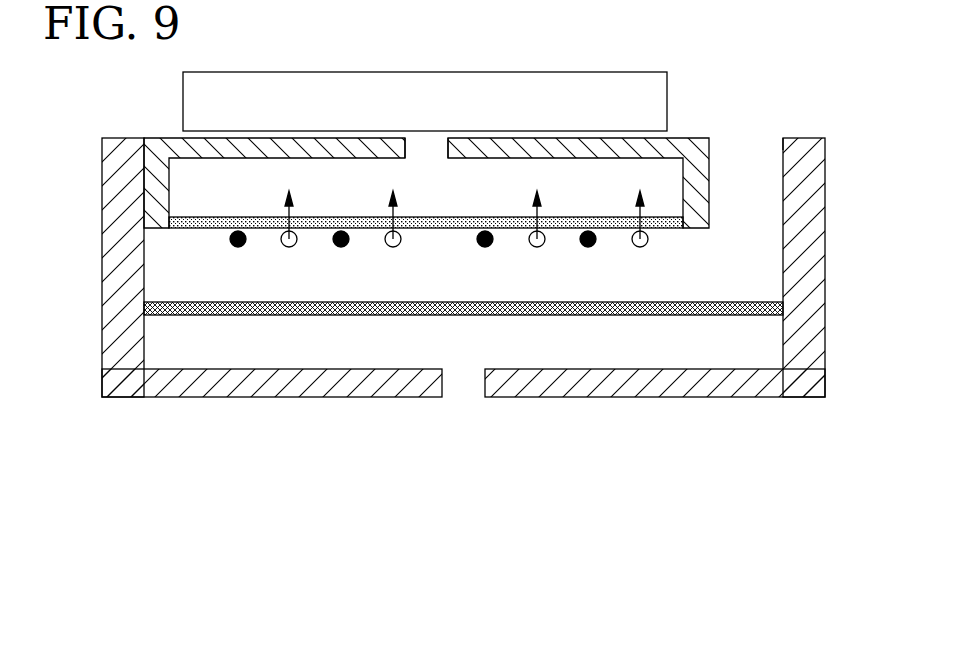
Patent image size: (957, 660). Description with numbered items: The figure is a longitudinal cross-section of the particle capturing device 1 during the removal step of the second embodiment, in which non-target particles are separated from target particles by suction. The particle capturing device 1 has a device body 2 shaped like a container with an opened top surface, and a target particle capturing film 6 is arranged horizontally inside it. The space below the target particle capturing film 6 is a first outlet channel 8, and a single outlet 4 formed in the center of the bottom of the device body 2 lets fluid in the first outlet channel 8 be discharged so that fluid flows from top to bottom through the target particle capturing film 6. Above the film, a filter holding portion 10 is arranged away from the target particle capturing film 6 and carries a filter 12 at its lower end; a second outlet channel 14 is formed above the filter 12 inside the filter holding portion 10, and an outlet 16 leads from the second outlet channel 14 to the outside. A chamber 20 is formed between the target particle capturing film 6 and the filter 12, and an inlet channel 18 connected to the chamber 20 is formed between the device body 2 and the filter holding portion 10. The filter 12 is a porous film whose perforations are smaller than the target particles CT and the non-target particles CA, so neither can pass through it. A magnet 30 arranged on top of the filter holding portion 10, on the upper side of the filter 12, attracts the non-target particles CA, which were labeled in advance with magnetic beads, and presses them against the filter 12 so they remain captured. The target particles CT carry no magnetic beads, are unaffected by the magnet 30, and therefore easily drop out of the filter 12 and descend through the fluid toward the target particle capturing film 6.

The particle capturing device 1 is at (496, 261).
The device body 2 is at (825, 240).
The outlet 4 is at (485, 388).
The target particle capturing film 6 is at (738, 300).
The first outlet channel 8 is at (633, 344).
The filter holding portion 10 is at (168, 138).
The filter 12 is at (552, 217).
The second outlet channel 14 is at (366, 202).
The outlet 16 is at (448, 148).
The inlet channel 18 is at (783, 150).
The chamber 20 is at (453, 290).
The magnet 30 is at (667, 88).
The target particles CT is at (238, 247).
The non-target particles CA is at (289, 247).